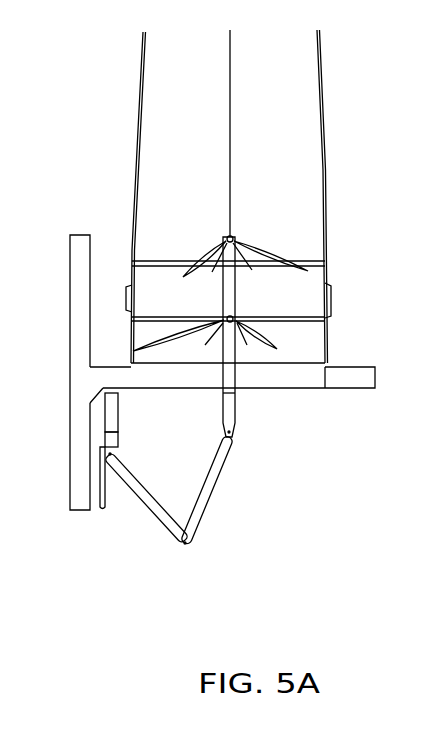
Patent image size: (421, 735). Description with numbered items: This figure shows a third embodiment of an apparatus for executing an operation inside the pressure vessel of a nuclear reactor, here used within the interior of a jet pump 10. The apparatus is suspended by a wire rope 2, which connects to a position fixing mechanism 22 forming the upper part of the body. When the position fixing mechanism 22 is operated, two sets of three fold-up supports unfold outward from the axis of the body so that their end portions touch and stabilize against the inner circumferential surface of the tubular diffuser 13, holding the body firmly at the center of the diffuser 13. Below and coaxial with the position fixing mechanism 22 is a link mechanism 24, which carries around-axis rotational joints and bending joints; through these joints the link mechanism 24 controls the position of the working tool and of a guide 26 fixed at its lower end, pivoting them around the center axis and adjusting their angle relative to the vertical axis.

The wire rope 2 is at (230, 68).
The jet pump 10 is at (70, 440).
The tubular diffuser 13 is at (322, 115).
The position fixing mechanism 22 is at (277, 247).
The link mechanism 24 is at (222, 508).
The guide 26 is at (108, 492).